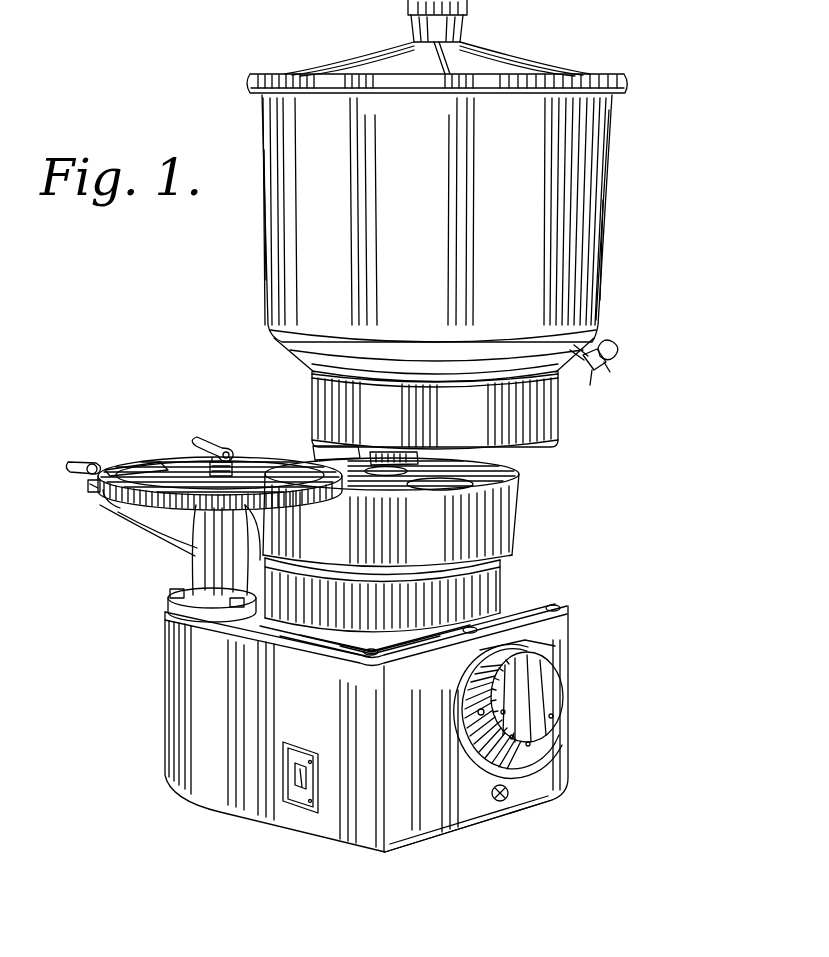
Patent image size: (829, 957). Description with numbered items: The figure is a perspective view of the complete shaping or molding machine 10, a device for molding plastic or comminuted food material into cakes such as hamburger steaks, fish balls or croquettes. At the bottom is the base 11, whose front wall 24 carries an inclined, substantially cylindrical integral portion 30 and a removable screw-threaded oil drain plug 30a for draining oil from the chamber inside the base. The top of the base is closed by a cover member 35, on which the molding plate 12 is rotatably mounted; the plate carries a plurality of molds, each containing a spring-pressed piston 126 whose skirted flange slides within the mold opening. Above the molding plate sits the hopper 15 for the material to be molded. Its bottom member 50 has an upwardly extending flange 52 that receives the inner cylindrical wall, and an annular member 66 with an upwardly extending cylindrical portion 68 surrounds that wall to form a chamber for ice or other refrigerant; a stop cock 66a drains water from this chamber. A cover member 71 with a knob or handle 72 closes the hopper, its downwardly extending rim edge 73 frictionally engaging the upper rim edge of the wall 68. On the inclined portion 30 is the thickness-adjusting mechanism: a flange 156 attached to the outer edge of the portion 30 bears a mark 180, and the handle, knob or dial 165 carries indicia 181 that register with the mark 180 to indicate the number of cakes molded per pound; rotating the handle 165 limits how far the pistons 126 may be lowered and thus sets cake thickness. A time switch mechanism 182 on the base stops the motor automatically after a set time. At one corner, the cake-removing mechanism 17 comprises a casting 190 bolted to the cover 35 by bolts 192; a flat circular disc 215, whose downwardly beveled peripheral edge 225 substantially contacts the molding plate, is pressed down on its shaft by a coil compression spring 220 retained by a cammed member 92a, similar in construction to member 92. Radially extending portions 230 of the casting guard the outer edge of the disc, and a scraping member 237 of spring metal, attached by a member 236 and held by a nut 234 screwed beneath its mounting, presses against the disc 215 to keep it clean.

The machine 10 is at (214, 347).
The base 11 is at (162, 712).
The molding plate 12 is at (516, 505).
The hopper 15 is at (622, 234).
The mechanism for removing the molded cakes 17 is at (175, 438).
The front wall 24 is at (460, 814).
The inclined integral portion 30 is at (476, 760).
The oil drain plug 30a is at (506, 801).
The cover member 35 is at (520, 602).
The hopper base 50 is at (556, 446).
The upwardly extending flange 52 is at (556, 408).
The annular member 66 is at (268, 215).
The stop cock 66a is at (596, 382).
The cylindrical portion 68 is at (606, 166).
The cover member 71 is at (512, 62).
The knob 72 is at (458, 32).
The rim edge 73 is at (628, 90).
The member 92 is at (221, 443).
The member 92a is at (205, 440).
The piston 126 is at (436, 490).
The flange 156 is at (560, 739).
The handle 165 is at (553, 690).
The mark 180 is at (495, 648).
The indicia 181 is at (540, 660).
The time switch mechanism 182 is at (300, 780).
The casting 190 is at (150, 540).
The bolts 192 is at (171, 595).
The disc 215 is at (262, 470).
The coil compression spring 220 is at (228, 470).
The beveled peripheral edge 225 is at (177, 495).
The radially extending portions 230 is at (139, 513).
The nut 234 is at (92, 488).
The member 236 is at (70, 462).
The scraping member 237 is at (125, 462).